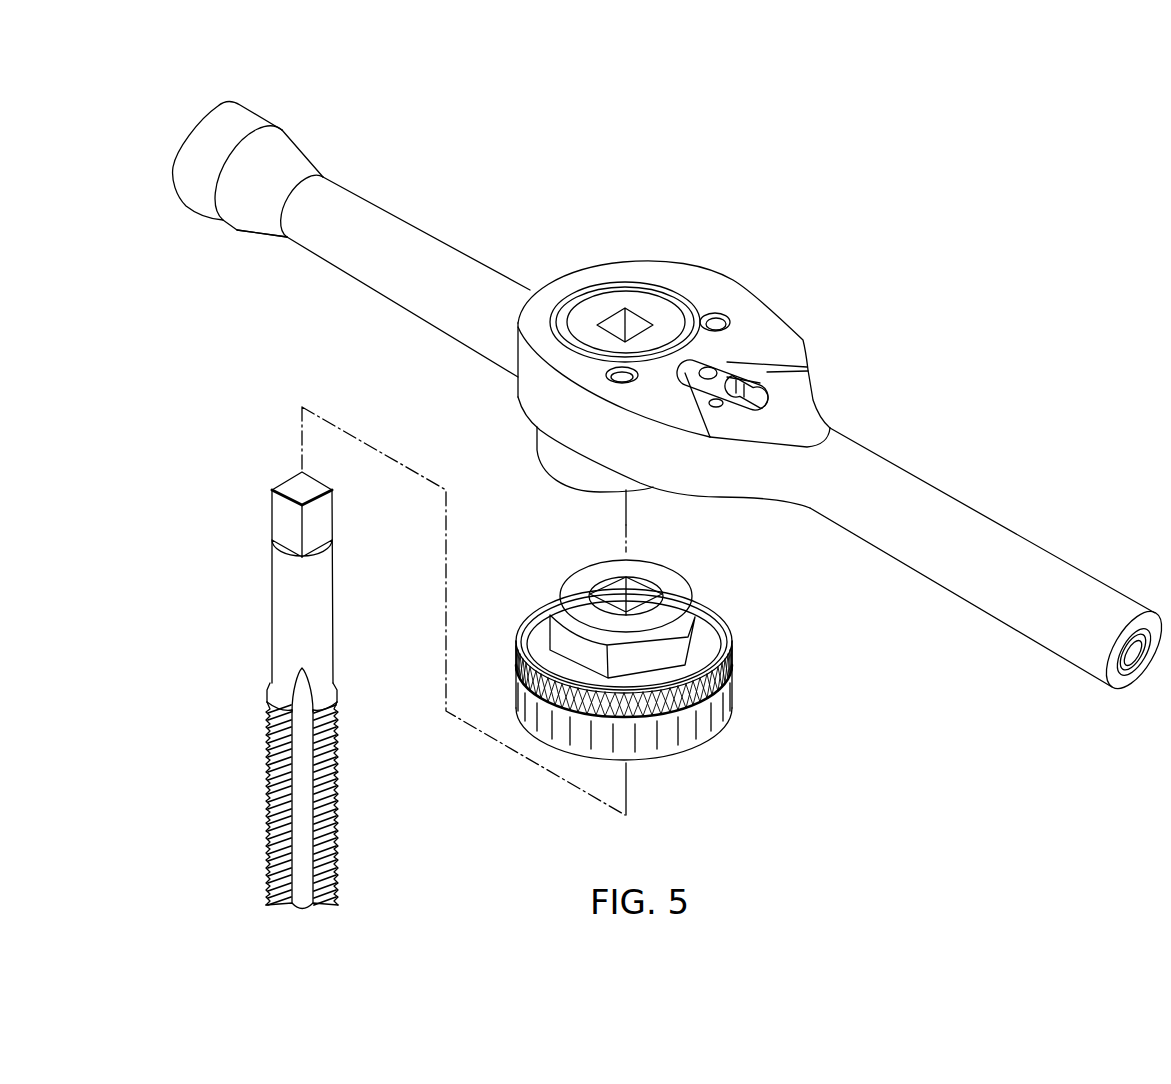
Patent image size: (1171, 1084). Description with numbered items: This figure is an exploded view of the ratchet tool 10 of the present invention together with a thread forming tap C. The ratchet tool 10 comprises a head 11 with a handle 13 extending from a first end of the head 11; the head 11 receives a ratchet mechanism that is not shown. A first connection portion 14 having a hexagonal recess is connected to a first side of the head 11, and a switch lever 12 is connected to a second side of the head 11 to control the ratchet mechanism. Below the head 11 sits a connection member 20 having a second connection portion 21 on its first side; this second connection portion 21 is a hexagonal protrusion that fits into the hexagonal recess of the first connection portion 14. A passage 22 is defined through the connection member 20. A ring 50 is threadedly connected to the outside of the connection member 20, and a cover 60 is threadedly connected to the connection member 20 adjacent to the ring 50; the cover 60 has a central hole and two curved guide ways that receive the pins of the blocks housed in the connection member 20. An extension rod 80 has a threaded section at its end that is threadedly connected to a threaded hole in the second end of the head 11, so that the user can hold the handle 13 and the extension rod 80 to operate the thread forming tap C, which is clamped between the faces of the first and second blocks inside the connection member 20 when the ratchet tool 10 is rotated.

The ratchet tool 10 is at (672, 400).
The head 11 is at (752, 322).
The switch lever 12 is at (760, 382).
The handle 13 is at (995, 545).
The first connection portion 14 is at (553, 450).
The connection member 20 is at (720, 632).
The second connection portion 21 is at (705, 643).
The passage 22 is at (640, 597).
The ring 50 is at (727, 665).
The cover 60 is at (713, 717).
The extension rod 80 is at (457, 260).
The thread forming tap C is at (279, 521).